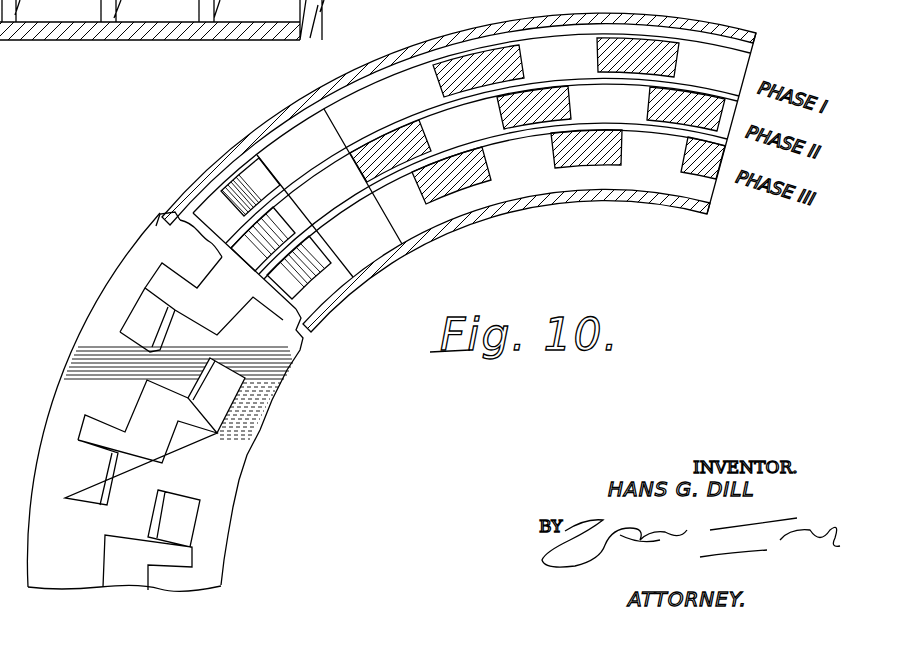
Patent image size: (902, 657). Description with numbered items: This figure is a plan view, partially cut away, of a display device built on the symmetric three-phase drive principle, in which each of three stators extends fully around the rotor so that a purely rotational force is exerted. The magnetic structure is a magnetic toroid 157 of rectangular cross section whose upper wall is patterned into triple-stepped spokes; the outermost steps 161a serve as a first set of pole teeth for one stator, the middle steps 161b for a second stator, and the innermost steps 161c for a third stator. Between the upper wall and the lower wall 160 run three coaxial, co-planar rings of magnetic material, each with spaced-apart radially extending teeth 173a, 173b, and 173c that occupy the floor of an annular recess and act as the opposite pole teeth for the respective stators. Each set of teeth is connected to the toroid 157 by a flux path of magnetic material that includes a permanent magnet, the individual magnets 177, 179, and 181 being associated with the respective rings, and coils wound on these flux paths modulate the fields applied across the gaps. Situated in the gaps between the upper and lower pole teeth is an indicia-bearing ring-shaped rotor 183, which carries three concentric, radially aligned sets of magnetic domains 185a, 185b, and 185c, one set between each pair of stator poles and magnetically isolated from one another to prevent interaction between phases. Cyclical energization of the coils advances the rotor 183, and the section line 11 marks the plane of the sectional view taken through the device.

The magnetic toroid 157 is at (598, 197).
The lower wall 160 is at (250, 40).
The outermost steps 161a is at (95, 560).
The middle steps 161b is at (152, 502).
The innermost steps 161c is at (212, 477).
The radially extending teeth 173a is at (476, 58).
The radially extending teeth 173b is at (531, 96).
The radially extending teeth 173c is at (582, 133).
The permanent magnet 177 is at (0, 30).
The permanent magnet 179 is at (112, 14).
The permanent magnet 181 is at (212, 8).
The rotor 183 is at (311, 298).
The magnetic domains 185a is at (266, 181).
The magnetic domains 185b is at (297, 213).
The magnetic domains 185c is at (335, 290).
The section line 11- 11 is at (53, 353).